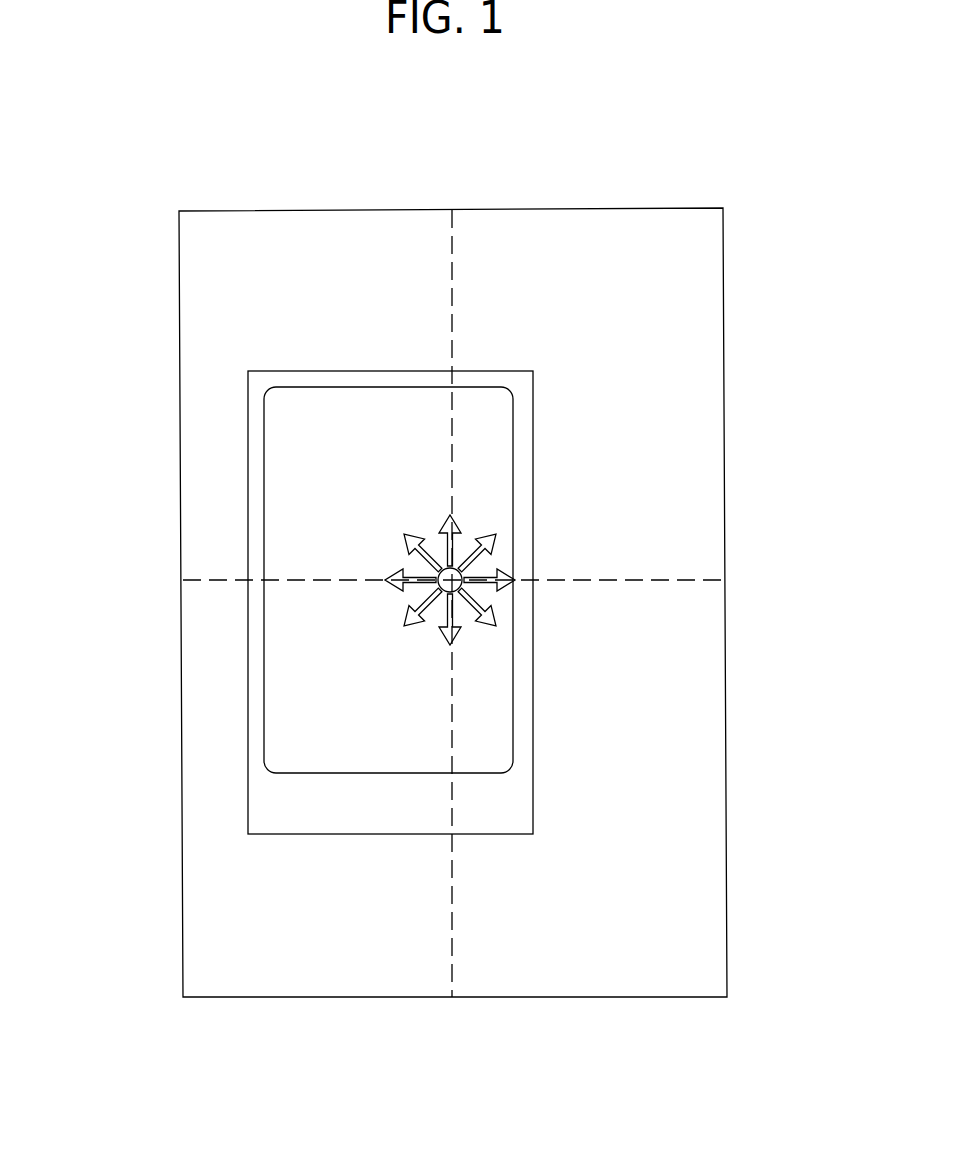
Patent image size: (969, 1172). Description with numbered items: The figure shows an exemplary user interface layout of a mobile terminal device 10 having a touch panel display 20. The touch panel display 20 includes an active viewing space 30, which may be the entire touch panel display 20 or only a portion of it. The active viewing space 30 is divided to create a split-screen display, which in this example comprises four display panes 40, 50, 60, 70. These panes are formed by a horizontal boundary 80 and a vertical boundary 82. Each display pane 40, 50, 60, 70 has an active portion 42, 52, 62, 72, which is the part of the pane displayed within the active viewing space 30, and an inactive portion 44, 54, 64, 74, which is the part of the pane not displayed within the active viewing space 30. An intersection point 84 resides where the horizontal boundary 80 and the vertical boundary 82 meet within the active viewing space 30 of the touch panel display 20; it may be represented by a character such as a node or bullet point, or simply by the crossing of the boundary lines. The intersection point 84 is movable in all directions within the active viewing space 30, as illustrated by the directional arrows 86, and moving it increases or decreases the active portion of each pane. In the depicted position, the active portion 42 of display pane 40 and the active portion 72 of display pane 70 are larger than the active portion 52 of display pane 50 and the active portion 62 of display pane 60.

The mobile terminal device 10 is at (311, 371).
The touch panel display 20 is at (377, 387).
The active viewing space 30 is at (290, 412).
The display pane 40 is at (288, 453).
The active portion 42 is at (293, 497).
The inactive portion 44 is at (205, 341).
The display pane 50 is at (495, 492).
The active portion 52 is at (498, 428).
The inactive portion 54 is at (670, 288).
The display pane 60 is at (502, 673).
The active portion 62 is at (492, 728).
The inactive portion 64 is at (688, 837).
The display pane 70 is at (293, 683).
The active portion 72 is at (288, 740).
The inactive portion 74 is at (225, 903).
The horizontal boundary 80 is at (698, 577).
The vertical boundary 82 is at (452, 297).
The intersection point 84 is at (437, 573).
The directional arrows 86 is at (437, 600).